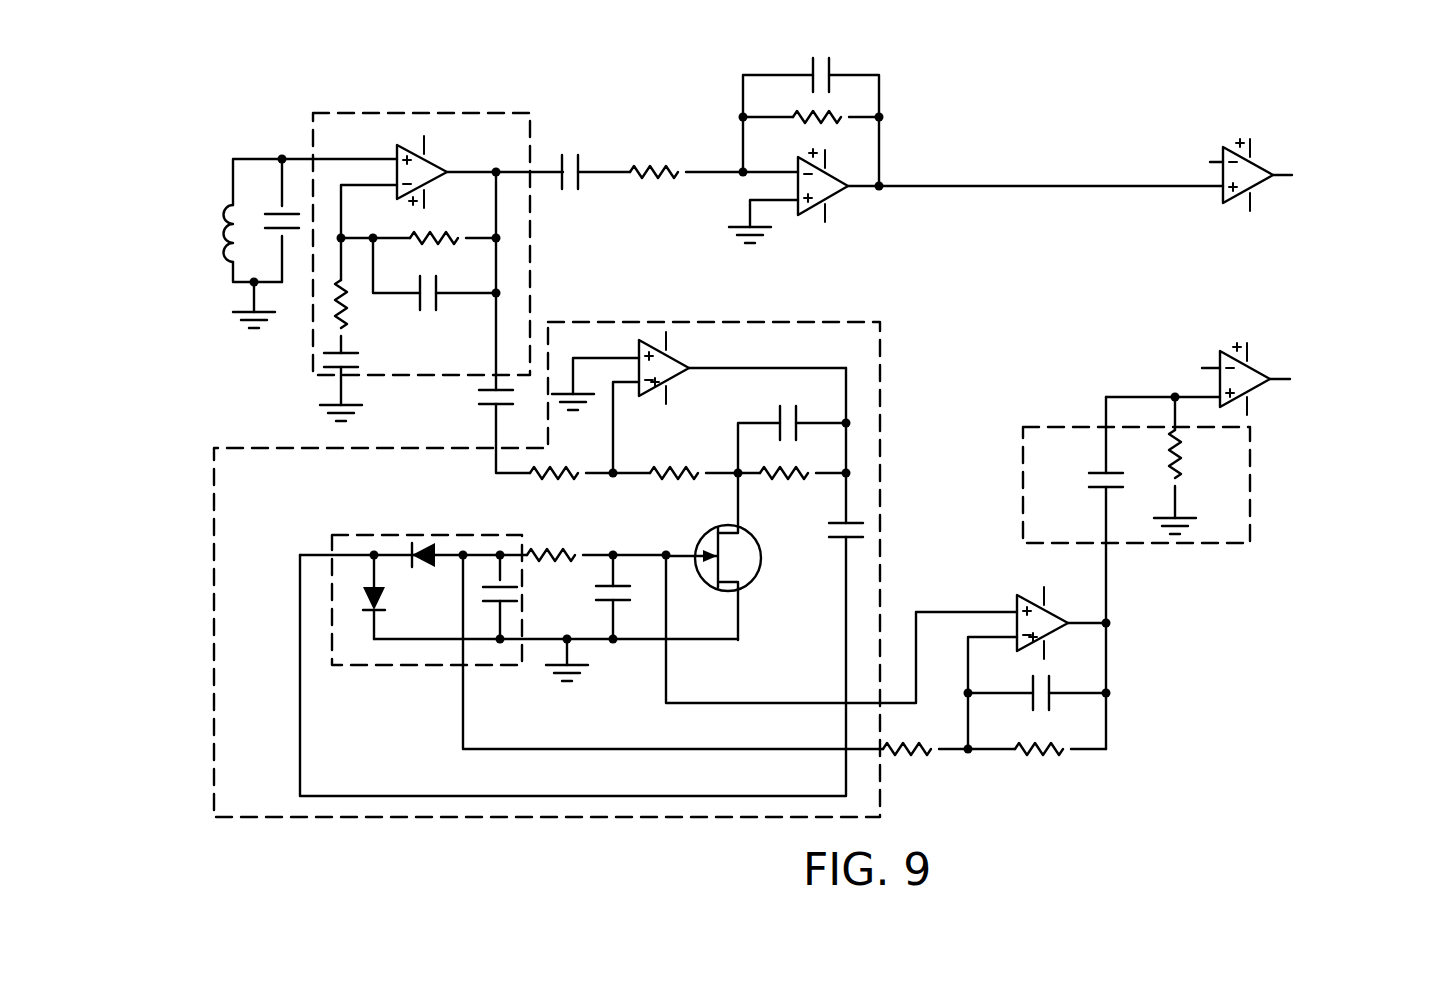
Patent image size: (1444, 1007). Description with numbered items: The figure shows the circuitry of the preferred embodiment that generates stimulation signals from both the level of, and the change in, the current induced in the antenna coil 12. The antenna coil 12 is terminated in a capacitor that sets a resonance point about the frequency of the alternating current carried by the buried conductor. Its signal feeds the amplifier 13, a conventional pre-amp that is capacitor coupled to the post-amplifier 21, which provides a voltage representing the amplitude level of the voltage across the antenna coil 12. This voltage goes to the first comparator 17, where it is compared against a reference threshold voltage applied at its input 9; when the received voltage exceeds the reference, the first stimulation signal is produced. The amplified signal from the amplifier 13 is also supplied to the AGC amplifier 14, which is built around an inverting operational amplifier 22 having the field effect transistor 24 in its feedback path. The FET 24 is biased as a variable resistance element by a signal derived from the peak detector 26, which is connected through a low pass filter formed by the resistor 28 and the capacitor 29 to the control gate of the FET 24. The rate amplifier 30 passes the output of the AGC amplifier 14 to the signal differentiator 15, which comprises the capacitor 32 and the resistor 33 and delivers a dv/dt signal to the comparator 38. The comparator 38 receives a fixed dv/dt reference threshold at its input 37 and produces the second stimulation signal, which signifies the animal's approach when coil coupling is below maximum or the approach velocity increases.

The Vss threshold voltage input of signal strength comparator 9 is at (1212, 160).
The antenna coil 12 is at (219, 232).
The amplifier 13 is at (402, 112).
The AGC amplifier 14 is at (713, 320).
The signal differentiator 15 is at (1258, 498).
The first comparator 17 is at (1310, 146).
The post-amplifier 21 is at (873, 54).
The inverting operational amplifier 22 is at (710, 418).
The field effect transistor 24 is at (732, 561).
The peak detector 26 is at (450, 535).
The resistor 28 is at (531, 558).
The capacitor 29 is at (624, 597).
The rate amplifier 30 is at (1053, 611).
The capacitor 32 is at (1081, 470).
The resistor 33 is at (1191, 465).
The Vr threshold voltage input of signal rate comparator 37 is at (1212, 368).
The comparator 38 is at (1326, 369).